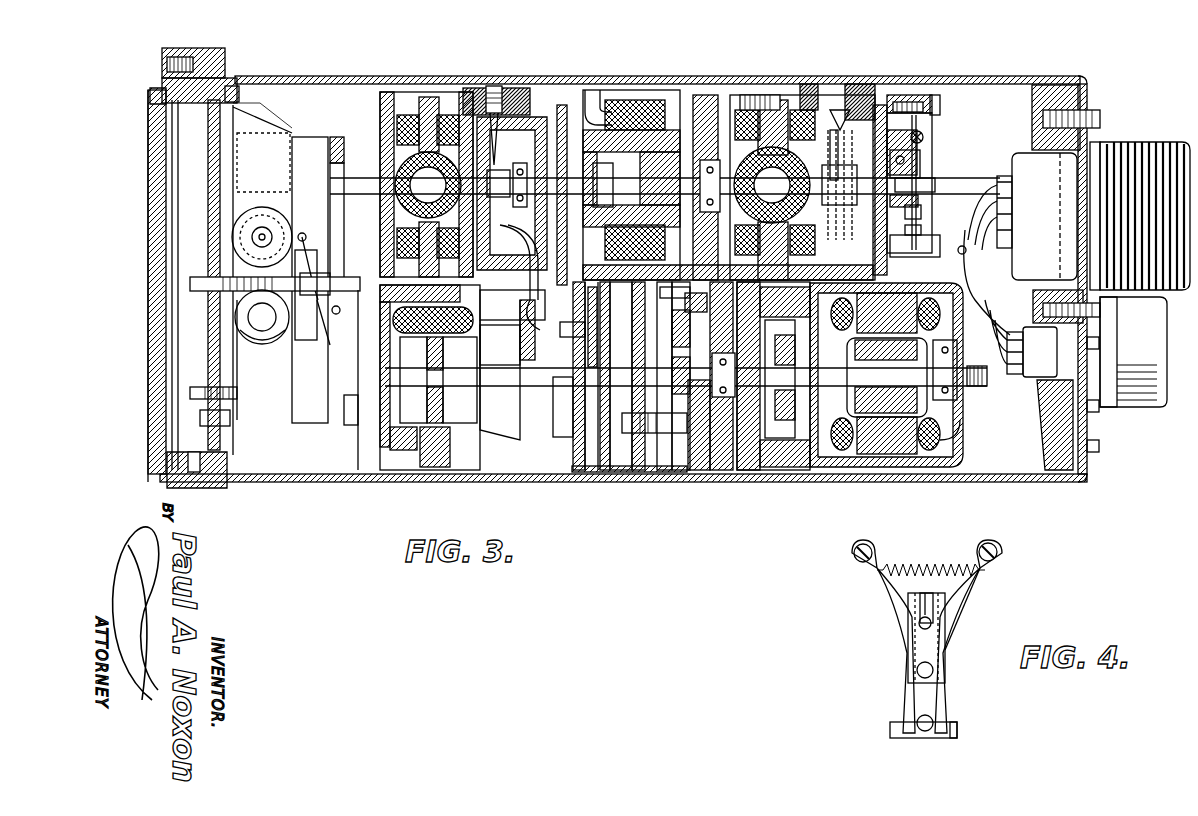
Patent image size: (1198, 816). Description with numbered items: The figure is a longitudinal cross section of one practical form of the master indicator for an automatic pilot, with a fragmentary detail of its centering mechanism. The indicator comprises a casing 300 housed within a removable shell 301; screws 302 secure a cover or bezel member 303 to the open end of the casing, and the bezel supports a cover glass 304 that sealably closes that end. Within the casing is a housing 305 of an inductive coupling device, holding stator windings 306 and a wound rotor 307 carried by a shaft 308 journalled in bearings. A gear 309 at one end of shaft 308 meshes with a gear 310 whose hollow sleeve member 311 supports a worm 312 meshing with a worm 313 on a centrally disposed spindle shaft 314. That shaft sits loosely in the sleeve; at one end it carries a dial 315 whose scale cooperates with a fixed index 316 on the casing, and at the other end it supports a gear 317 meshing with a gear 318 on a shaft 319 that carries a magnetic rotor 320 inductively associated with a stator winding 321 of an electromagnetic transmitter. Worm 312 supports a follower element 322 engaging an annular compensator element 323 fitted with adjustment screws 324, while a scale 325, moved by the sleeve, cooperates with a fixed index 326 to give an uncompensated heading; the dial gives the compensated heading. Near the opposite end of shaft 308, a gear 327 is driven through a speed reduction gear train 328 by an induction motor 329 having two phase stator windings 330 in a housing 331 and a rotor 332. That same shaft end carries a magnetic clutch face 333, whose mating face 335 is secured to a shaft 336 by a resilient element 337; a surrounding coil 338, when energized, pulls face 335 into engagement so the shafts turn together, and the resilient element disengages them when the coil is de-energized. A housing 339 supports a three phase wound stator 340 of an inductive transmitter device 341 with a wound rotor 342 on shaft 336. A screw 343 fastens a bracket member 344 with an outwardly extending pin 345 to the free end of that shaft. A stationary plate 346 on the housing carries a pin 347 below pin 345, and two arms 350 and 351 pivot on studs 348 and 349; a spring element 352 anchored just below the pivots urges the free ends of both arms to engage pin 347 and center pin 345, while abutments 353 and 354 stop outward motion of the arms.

In FIG. 3, the casing 300 is at (225, 452).
In FIG. 3, the removable shell 301 is at (964, 76).
In FIG. 3, the screws 302 is at (176, 54).
In FIG. 3, the cover or bezel member 303 is at (158, 90).
In FIG. 3, the cover glass 304 is at (160, 440).
In FIG. 3, the housing of inductive coupling device 305 is at (440, 92).
In FIG. 3, the stator windings 306 is at (480, 88).
In FIG. 3, the wound rotor 307 is at (465, 197).
In FIG. 3, the shaft 308 is at (513, 97).
In FIG. 3, the gear 309 is at (336, 138).
In FIG. 3, the gear 310 is at (304, 233).
In FIG. 3, the hollow sleeve member 311 is at (334, 313).
In FIG. 3, the worm 312 is at (232, 222).
In FIG. 3, the worm 313 is at (248, 309).
In FIG. 3, the spindle shaft 314 is at (195, 285).
In FIG. 3, the dial 315 is at (178, 140).
In FIG. 3, the fixed index 316 is at (214, 80).
In FIG. 3, the gear 317 is at (328, 346).
In FIG. 3, the gear 318 is at (348, 413).
In FIG. 3, the shaft 319 is at (362, 447).
In FIG. 3, the magnetic rotor 320 is at (437, 402).
In FIG. 3, the stator winding 321 is at (440, 455).
In FIG. 3, the follower element 322 is at (256, 333).
In FIG. 3, the annular compensator element 323 is at (240, 380).
In FIG. 3, the adjustment screws 324 is at (192, 393).
In FIG. 3, the scale 325 is at (318, 137).
In FIG. 3, the fixed index 326 is at (262, 120).
In FIG. 3, the gear 327 is at (562, 95).
In FIG. 3, the speed reduction gear train 328 is at (597, 450).
In FIG. 3, the induction motor 329 is at (953, 457).
In FIG. 3, the two phase stator windings 330 is at (843, 455).
In FIG. 3, the housing 331 is at (950, 462).
In FIG. 3, the rotor 332 is at (873, 380).
In FIG. 3, the clutch face 333 is at (600, 95).
In FIG. 3, the clutch face 335 is at (650, 130).
In FIG. 3, the shaft 336 is at (833, 182).
In FIG. 4, the shaft 336 is at (920, 620).
In FIG. 3, the resilient element 337 is at (697, 145).
In FIG. 3, the coil 338 is at (620, 107).
In FIG. 3, the housing 339 is at (773, 97).
In FIG. 3, the three phase wound stator 340 is at (803, 84).
In FIG. 3, the inductive transmitter device 341 is at (812, 150).
In FIG. 3, the wound rotor 342 is at (857, 86).
In FIG. 3, the screw 343 is at (918, 157).
In FIG. 4, the screw 343 is at (947, 605).
In FIG. 3, the bracket member 344 is at (905, 190).
In FIG. 4, the bracket member 344 is at (917, 637).
In FIG. 3, the pin 345 is at (918, 213).
In FIG. 4, the pin 345 is at (917, 672).
In FIG. 3, the stationary plate 346 is at (878, 95).
In FIG. 3, the pin 347 is at (910, 247).
In FIG. 4, the pin 347 is at (925, 732).
In FIG. 4, the stud 348 is at (853, 555).
In FIG. 3, the stud 349 is at (925, 112).
In FIG. 4, the stud 349 is at (1000, 552).
In FIG. 4, the arm 350 is at (873, 613).
In FIG. 3, the arm 351 is at (903, 100).
In FIG. 4, the arm 351 is at (975, 608).
In FIG. 3, the spring element 352 is at (924, 135).
In FIG. 4, the spring element 352 is at (935, 566).
In FIG. 4, the abutment 353 is at (892, 730).
In FIG. 4, the abutment 354 is at (952, 730).